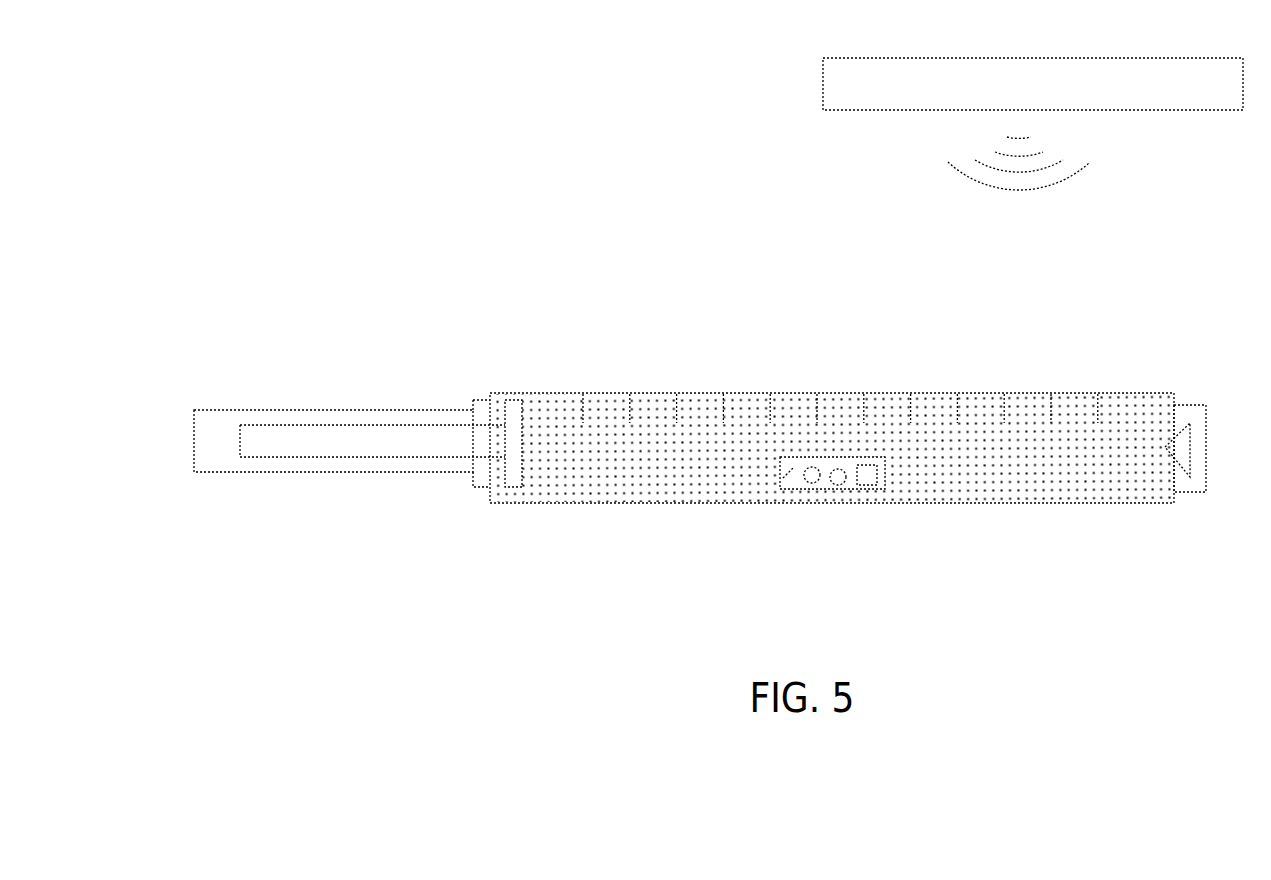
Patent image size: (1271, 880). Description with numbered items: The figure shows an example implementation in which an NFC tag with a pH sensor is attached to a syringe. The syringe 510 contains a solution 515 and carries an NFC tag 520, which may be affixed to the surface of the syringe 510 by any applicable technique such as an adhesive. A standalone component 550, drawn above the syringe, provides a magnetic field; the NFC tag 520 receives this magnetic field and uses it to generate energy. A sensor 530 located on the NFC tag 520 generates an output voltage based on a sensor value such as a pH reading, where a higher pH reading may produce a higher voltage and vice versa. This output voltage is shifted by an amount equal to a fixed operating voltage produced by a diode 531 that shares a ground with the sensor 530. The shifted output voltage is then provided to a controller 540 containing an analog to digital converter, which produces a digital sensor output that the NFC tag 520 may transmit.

The syringe 510 is at (700, 458).
The solution 515 is at (1057, 470).
The NFC tag 520 is at (783, 478).
The sensor 530 is at (832, 485).
The diode 531 is at (822, 462).
The controller 540 is at (872, 480).
The standalone component 550 is at (1033, 123).